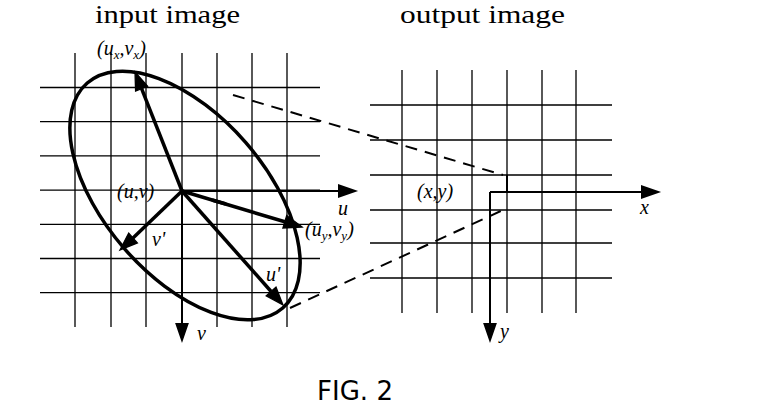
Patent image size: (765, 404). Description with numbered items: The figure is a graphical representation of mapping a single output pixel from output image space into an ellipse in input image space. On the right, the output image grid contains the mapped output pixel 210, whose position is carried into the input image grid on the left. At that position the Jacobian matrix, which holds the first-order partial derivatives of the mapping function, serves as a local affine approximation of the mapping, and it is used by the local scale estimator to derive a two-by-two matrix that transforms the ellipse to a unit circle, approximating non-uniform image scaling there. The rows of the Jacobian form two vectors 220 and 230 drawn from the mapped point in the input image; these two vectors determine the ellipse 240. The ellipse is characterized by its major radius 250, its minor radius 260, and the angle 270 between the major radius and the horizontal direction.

The mapped output pixel 210 is at (508, 186).
The first Jacobian row vector 220 is at (168, 140).
The second Jacobian row vector 230 is at (240, 206).
The ellipse 240 is at (237, 325).
The major radius 250 is at (223, 238).
The minor radius 260 is at (160, 210).
The angle between major radius and horizontal direction 270 is at (220, 201).